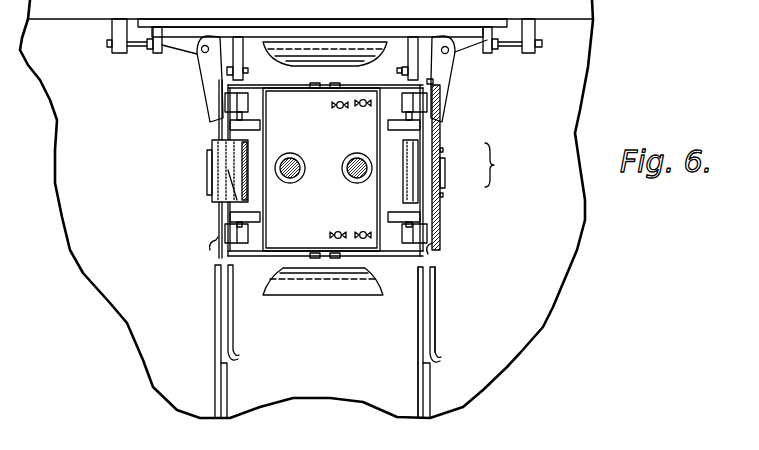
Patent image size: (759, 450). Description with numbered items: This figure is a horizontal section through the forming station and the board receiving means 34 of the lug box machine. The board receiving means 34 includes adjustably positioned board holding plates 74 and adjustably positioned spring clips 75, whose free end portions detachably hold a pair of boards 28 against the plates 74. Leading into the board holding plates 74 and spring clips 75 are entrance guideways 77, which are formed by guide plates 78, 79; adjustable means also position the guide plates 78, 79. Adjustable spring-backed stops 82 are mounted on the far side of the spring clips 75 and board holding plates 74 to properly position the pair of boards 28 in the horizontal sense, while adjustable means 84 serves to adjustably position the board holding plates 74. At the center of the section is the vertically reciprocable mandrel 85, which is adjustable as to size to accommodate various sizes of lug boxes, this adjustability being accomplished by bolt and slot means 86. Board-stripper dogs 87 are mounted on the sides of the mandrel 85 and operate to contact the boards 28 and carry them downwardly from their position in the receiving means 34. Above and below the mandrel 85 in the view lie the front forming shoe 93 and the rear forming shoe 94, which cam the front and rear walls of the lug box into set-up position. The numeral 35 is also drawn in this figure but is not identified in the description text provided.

The front forming shoe 93 is at (332, 50).
The rear forming shoe 94 is at (322, 293).
The adjustable spring-backed stop 82 is at (222, 80).
The adjustable means 84 is at (518, 70).
The board-stripper dog 87 is at (220, 237).
The bolt and slot means 86 is at (361, 107).
The board holding plate 74 is at (220, 218).
The spring clip 75 is at (230, 160).
The tab 35 is at (210, 178).
The board receiving means 34 is at (502, 165).
The mandrel 85 is at (287, 242).
The board 28 is at (213, 256).
The entrance guideway 77 is at (225, 328).
The guide plate 78 is at (418, 322).
The guide plate 79 is at (435, 300).